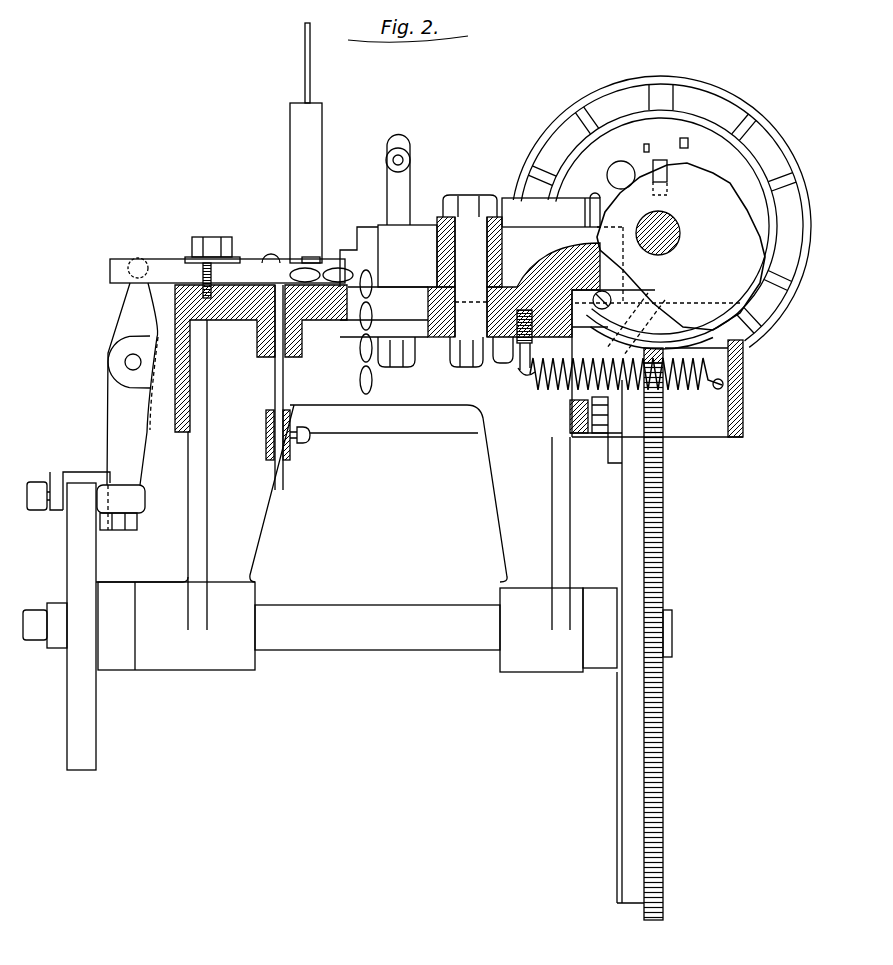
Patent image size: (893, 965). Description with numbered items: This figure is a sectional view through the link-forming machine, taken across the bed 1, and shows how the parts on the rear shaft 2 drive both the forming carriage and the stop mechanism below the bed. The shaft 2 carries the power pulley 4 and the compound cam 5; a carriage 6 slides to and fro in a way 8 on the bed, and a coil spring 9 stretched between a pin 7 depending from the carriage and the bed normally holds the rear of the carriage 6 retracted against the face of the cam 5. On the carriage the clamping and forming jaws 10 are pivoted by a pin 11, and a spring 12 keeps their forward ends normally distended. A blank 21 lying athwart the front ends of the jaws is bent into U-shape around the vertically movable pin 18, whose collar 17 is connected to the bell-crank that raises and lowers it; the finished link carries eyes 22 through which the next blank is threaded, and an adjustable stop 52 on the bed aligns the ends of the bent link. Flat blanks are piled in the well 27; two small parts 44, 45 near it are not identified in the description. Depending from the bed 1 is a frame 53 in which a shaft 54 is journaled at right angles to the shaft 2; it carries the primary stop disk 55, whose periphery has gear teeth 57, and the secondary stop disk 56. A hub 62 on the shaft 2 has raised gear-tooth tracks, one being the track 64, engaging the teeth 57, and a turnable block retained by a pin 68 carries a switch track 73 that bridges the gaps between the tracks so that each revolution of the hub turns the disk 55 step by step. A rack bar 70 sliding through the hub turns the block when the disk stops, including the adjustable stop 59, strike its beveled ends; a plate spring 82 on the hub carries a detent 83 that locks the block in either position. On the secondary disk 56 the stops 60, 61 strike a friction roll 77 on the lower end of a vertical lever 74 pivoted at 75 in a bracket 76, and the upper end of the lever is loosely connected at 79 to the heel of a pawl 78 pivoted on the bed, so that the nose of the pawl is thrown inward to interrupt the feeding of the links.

The bed 1 is at (330, 318).
The shaft 2 is at (665, 230).
The power pulley 4 is at (522, 150).
The compound cam 5 is at (670, 259).
The carriage 6 is at (598, 316).
The pin 7 is at (518, 358).
The way 8 is at (397, 312).
The coil spring 9 is at (690, 388).
The clamping and forming jaws 10 is at (437, 270).
The pin 11 is at (467, 320).
The spring 12 is at (543, 265).
The collar 17 is at (265, 420).
The pin 18 is at (275, 375).
The blank 21 is at (320, 265).
The eyes 22 is at (294, 262).
The well 27 is at (295, 158).
The ring 44 is at (410, 161).
The pin 45 is at (395, 142).
The adjustable stop 52 is at (196, 267).
The frame 53 is at (487, 470).
The shaft 54 is at (352, 605).
The primary stop disk 55 is at (660, 563).
The secondary stop disk 56 is at (92, 762).
The gear teeth 57 is at (680, 889).
The adjustable stop 59 is at (612, 456).
The stationary stop 60 is at (48, 605).
The adjustable stop 61 is at (57, 465).
The hub 62 is at (650, 140).
The raised track 64 is at (593, 128).
The pin 68 is at (688, 140).
The rack bar 70 is at (609, 170).
The raised track 73 is at (657, 90).
The vertical lever 74 is at (123, 305).
The pivot 75 is at (130, 362).
The bracket 76 is at (145, 398).
The friction roll 77 is at (140, 500).
The pawl 78 is at (110, 266).
The loose connection 79 is at (140, 257).
The plate spring 82 is at (745, 346).
The detent 83 is at (668, 162).